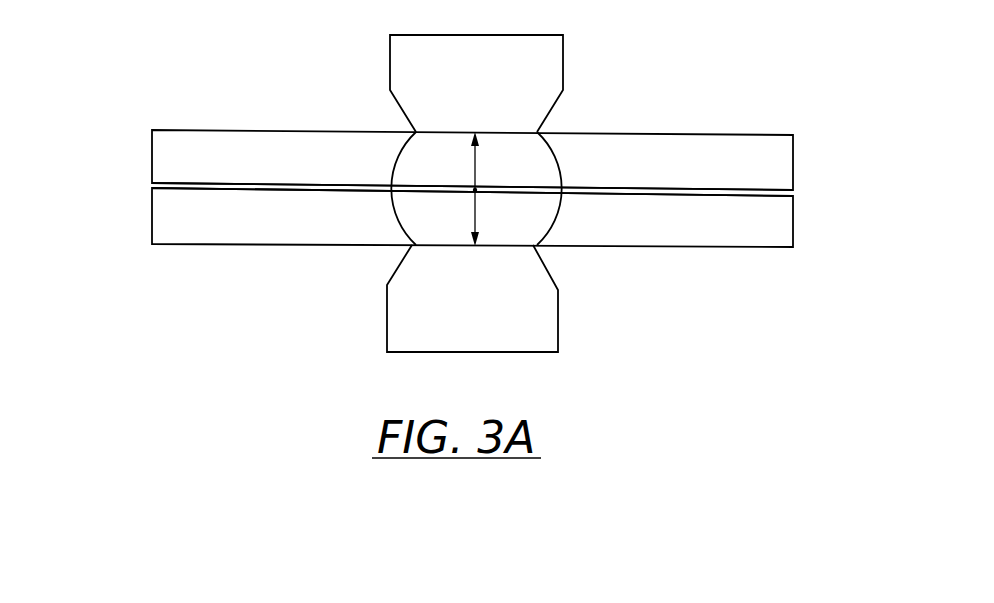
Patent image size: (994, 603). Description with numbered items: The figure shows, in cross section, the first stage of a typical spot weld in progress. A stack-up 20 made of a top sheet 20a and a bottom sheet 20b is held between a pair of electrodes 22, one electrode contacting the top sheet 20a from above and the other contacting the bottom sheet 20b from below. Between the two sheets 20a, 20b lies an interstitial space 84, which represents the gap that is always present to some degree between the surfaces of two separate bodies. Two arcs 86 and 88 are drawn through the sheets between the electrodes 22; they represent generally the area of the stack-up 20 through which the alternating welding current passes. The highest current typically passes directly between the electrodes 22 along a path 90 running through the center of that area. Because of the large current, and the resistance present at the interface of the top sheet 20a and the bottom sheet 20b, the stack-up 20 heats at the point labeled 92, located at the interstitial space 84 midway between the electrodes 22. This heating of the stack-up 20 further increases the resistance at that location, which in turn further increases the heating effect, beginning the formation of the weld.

The stack-up 20 is at (449, 189).
The top sheet 20a is at (793, 158).
The bottom sheet 20b is at (793, 213).
The electrodes 22 is at (563, 78).
The interstitial space 84 is at (638, 186).
The arc 86 is at (393, 162).
The arc 88 is at (547, 220).
The path 90 is at (476, 188).
The heating point 92 is at (477, 189).